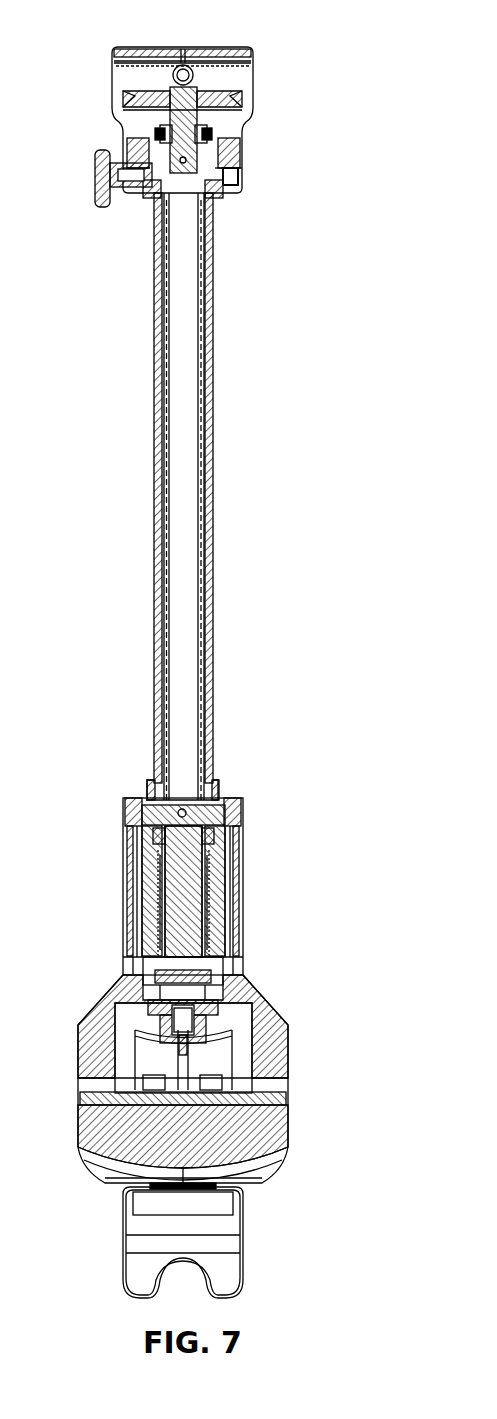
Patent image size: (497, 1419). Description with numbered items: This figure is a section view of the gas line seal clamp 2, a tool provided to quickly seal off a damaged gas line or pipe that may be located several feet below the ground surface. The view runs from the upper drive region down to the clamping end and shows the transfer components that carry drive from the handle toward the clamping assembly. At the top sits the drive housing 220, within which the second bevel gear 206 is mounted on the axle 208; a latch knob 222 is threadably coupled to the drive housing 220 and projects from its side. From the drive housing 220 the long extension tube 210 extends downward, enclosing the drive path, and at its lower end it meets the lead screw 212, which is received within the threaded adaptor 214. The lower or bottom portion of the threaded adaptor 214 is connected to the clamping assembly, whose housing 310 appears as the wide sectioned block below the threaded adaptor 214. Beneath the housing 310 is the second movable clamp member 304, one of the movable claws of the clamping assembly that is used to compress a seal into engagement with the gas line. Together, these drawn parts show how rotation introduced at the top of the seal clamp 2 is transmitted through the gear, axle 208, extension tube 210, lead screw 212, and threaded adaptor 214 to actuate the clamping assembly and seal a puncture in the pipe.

The gas line seal clamp 2 is at (236, 28).
The second bevel gear 206 is at (238, 97).
The axle 208 is at (188, 124).
The drive housing 220 is at (243, 180).
The latch knob 222 is at (98, 190).
The extension tube 210 is at (187, 283).
The lead screw 212 is at (184, 860).
The threaded adaptor 214 is at (208, 890).
The housing 310 is at (288, 1057).
The second movable clamp member 304 is at (246, 1253).